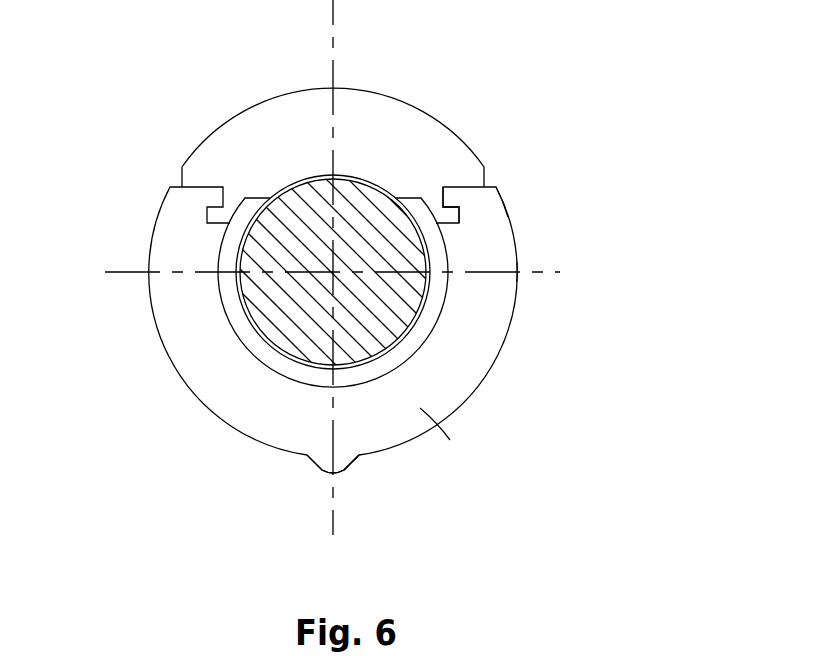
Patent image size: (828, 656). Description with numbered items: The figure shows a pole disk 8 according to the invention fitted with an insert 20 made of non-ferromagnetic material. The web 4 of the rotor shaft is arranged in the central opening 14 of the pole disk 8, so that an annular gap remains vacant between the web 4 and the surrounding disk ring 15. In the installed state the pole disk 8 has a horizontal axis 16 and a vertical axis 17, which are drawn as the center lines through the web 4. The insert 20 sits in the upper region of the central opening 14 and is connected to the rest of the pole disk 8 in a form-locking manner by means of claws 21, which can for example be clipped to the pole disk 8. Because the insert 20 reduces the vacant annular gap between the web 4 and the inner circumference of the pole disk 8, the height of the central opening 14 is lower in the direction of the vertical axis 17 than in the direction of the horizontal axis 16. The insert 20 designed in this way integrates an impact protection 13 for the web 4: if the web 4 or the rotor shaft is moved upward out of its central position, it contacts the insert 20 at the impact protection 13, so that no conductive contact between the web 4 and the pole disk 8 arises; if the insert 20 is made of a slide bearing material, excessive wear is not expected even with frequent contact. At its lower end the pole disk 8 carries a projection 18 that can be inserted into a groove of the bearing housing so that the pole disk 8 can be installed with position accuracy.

The web 4 is at (430, 330).
The pole disk 8 is at (441, 430).
The impact protection 13 is at (300, 177).
The central opening 14 is at (237, 308).
The disk ring 15 is at (507, 217).
The horizontal axis 16 is at (538, 283).
The vertical axis 17 is at (335, 493).
The projection 18 is at (343, 463).
The insert 20 is at (408, 170).
The claws 21 is at (462, 207).